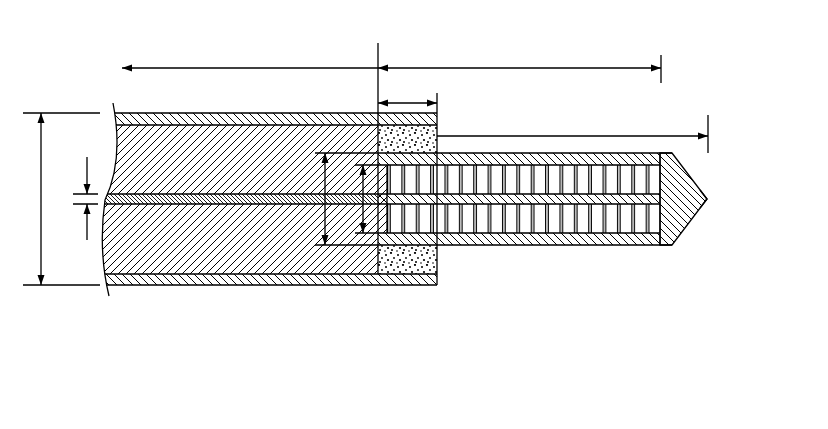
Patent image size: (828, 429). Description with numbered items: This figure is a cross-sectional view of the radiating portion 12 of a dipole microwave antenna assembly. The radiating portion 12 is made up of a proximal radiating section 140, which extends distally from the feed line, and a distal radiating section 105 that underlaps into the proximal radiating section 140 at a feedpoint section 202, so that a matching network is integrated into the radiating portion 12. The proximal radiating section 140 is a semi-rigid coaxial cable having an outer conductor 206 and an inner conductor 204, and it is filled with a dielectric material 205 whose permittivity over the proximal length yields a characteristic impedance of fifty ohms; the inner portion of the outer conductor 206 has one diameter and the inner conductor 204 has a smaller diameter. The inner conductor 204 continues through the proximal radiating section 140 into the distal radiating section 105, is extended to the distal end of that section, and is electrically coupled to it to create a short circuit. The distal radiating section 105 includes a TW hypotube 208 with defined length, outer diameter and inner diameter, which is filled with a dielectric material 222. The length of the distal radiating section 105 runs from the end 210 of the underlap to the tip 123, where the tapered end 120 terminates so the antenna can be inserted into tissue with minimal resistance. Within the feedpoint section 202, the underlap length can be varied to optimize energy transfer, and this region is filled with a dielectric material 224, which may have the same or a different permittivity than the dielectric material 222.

The radiating portion 12 is at (556, 349).
The distal radiating section 105 is at (617, 52).
The tapered end 120 is at (688, 174).
The tip 123 is at (707, 200).
The proximal radiating section 140 is at (263, 306).
The feedpoint section 202 is at (437, 290).
The inner conductor 204 is at (239, 199).
The dielectric material 205 is at (239, 199).
The outer conductor 206 is at (268, 199).
The TW hypotube 208 is at (605, 247).
The end 210 is at (437, 284).
The dielectric material 222 is at (500, 218).
The dielectric material 224 is at (438, 265).